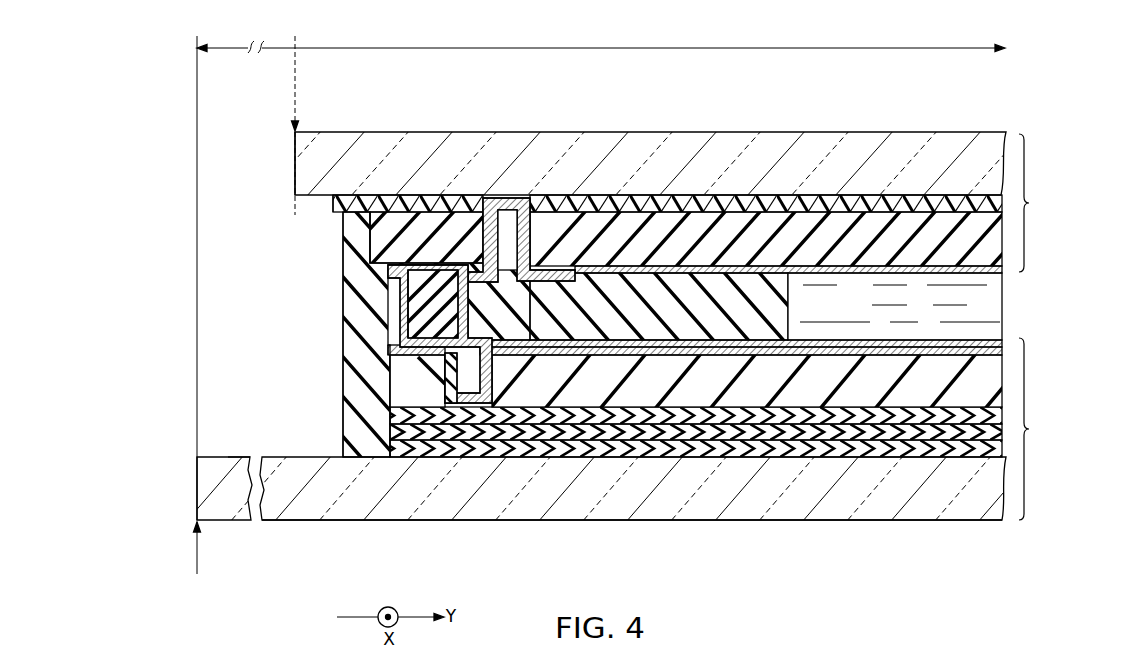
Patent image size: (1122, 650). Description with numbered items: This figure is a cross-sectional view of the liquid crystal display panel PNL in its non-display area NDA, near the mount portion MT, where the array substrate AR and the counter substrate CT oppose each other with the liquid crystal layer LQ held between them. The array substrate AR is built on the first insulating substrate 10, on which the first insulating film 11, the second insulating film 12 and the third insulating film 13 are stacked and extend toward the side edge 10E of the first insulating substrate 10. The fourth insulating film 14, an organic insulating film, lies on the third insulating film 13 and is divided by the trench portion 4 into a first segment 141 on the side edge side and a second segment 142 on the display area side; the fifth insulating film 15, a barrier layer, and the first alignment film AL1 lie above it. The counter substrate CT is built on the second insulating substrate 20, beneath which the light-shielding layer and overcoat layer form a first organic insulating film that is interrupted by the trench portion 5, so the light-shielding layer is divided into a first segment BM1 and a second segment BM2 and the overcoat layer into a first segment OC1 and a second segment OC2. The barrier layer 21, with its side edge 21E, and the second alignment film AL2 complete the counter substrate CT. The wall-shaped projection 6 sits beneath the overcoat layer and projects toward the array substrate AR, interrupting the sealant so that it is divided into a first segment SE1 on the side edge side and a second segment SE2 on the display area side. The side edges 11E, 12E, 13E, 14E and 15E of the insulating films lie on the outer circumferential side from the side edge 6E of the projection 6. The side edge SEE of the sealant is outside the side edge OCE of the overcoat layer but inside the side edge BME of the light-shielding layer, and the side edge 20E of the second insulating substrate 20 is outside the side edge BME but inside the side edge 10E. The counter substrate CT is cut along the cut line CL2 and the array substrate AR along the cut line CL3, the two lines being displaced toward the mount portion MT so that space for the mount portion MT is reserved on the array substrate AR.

The second insulating substrate 20 is at (295, 170).
The side edge of the second insulating substrate 20E is at (295, 145).
The first insulating substrate 10 is at (203, 488).
The side edge of the first insulating substrate 10E is at (196, 471).
The mount portion MT is at (233, 457).
The liquid crystal display panel PNL is at (604, 521).
The first segment of the overcoat layer OC1 is at (438, 240).
The second segment of the overcoat layer OC2 is at (751, 235).
The side edge of the overcoat layer OCE is at (369, 244).
The first segment of the light-shielding layer BM1 is at (418, 205).
The second segment of the light-shielding layer BM2 is at (940, 205).
The side edge of the light-shielding layer BME is at (332, 207).
The first segment of the sealant SE1 is at (357, 230).
The second segment of the sealant SE2 is at (642, 292).
The side edge of the sealant SEE is at (342, 360).
The liquid crystal layer LQ is at (1003, 305).
The first insulating film 11 is at (696, 448).
The second insulating film 12 is at (696, 432).
The third insulating film 13 is at (696, 415).
The side edge of the first insulating film 11E is at (389, 452).
The side edge of the second insulating film 12E is at (389, 433).
The side edge of the third insulating film 13E is at (389, 416).
The fourth insulating film 14 is at (712, 456).
The first segment of the fourth insulating film 141 is at (428, 392).
The second segment of the fourth insulating film 142 is at (738, 393).
The side edge of the fourth insulating film 14E is at (389, 382).
The fifth insulating film 15 is at (890, 354).
The side edge of the fifth insulating film 15E is at (388, 351).
The first alignment film AL1 is at (955, 345).
The second alignment film AL2 is at (855, 265).
The barrier layer 21 is at (524, 225).
The side edge of the barrier layer 21E is at (387, 273).
The trench portion 5 is at (508, 240).
The projection 6 is at (441, 283).
The side edge of the projection 6E is at (405, 306).
The trench portion 4 is at (468, 400).
The counter substrate CT is at (1035, 203).
The array substrate AR is at (1035, 429).
The non-display area NDA is at (601, 30).
The cut line CL2 is at (295, 115).
The cut line CL3 is at (197, 314).